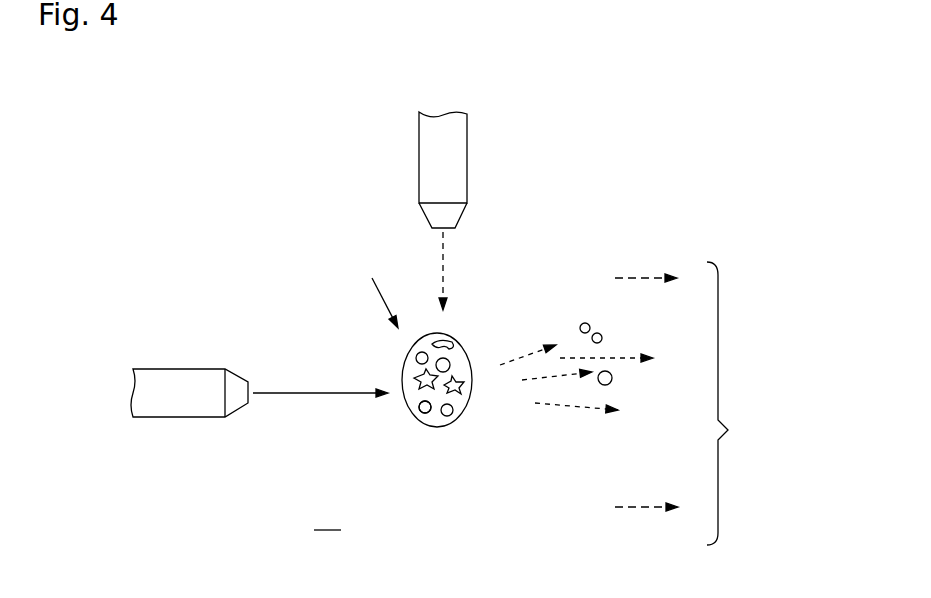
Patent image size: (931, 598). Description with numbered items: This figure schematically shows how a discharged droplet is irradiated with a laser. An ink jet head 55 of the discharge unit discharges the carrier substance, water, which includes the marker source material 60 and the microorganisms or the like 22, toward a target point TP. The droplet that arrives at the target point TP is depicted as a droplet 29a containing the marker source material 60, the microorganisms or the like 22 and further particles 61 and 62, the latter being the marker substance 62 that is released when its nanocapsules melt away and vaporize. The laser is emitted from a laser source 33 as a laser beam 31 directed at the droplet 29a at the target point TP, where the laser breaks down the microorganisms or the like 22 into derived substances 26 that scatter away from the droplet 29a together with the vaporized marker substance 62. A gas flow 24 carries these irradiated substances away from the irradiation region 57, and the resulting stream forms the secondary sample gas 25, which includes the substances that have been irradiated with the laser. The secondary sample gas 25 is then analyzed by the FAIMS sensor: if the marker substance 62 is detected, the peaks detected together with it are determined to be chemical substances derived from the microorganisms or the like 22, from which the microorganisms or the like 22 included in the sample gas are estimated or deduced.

The ink jet head 55 is at (458, 172).
The treatment point TP is at (381, 290).
The treatment region 29a is at (472, 355).
The microorganisms or the like 22 is at (462, 388).
The particle 61 is at (452, 410).
The marker substance 62 is at (447, 416).
The marker source material 60 is at (432, 434).
The chamber 57 is at (331, 516).
The spray nozzle 33 is at (188, 380).
The jet flow 31 is at (288, 390).
The dispersed particles 26 is at (608, 335).
The air flow 24 is at (630, 278).
The secondary sample gas 25 is at (718, 520).